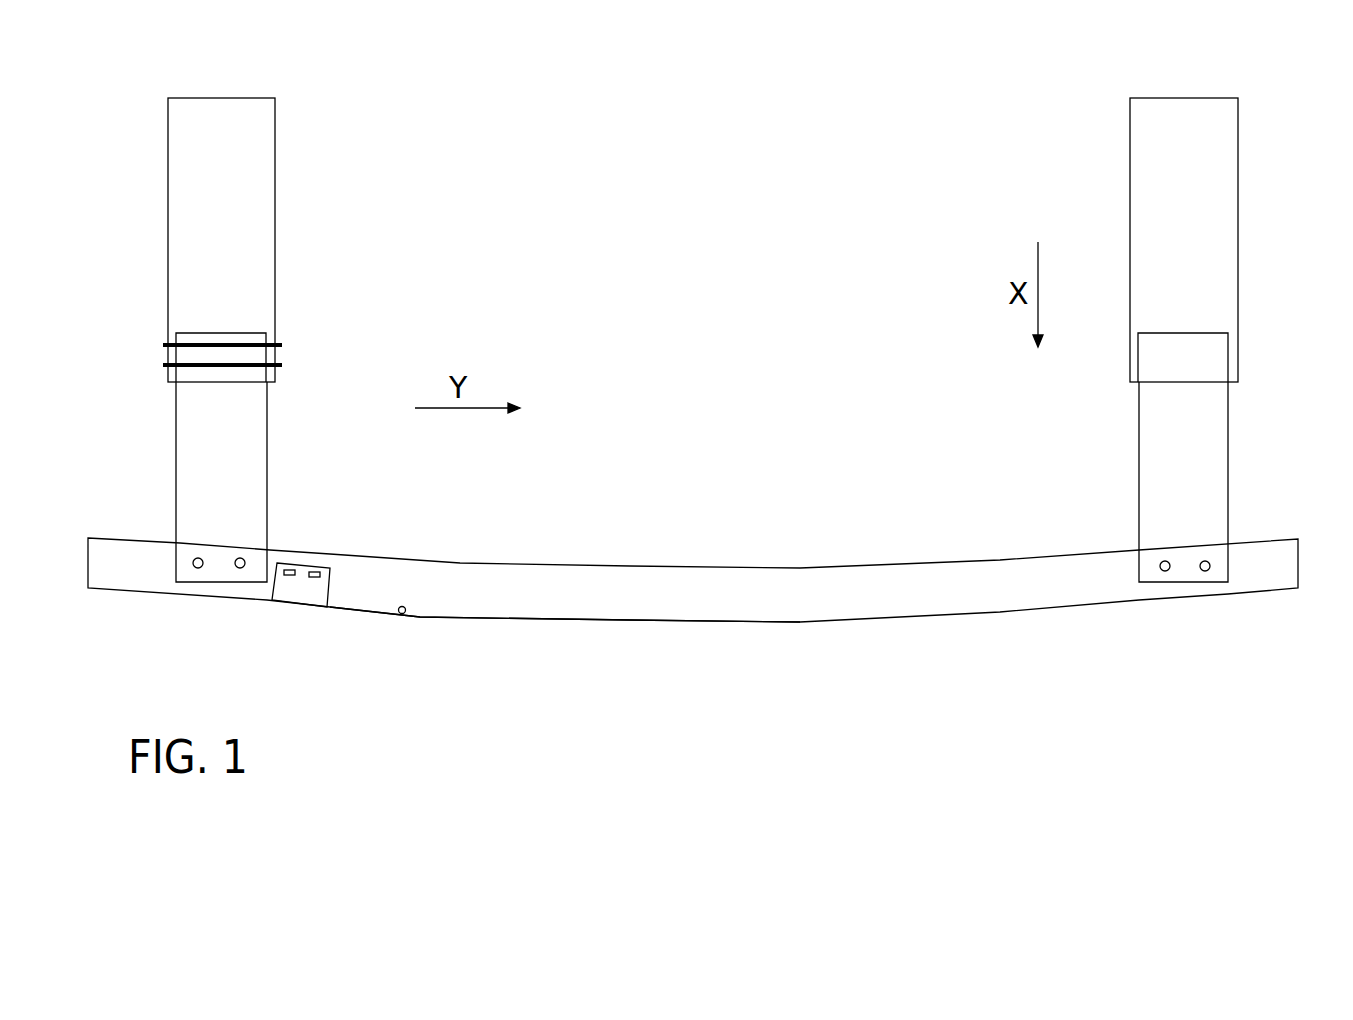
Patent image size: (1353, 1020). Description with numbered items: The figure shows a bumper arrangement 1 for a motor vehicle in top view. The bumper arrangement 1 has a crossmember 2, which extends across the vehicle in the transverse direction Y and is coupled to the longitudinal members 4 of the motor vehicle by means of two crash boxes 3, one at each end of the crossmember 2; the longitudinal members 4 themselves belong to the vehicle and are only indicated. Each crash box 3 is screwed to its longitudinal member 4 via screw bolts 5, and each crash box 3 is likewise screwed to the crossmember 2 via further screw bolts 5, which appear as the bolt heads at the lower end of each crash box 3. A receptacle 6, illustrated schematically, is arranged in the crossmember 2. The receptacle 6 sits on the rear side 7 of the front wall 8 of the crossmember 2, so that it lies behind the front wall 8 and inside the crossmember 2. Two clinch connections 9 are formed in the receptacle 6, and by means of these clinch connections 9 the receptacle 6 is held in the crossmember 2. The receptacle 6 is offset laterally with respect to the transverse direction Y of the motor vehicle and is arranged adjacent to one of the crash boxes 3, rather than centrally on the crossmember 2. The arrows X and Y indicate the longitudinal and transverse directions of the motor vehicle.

The bumper arrangement 1 is at (823, 202).
The crossmember 2 is at (578, 600).
The crash box 3 is at (245, 482).
The longitudinal member 4 is at (252, 212).
The screw bolts 5 is at (283, 365).
The receptacle 6 is at (295, 595).
The rear side 7 is at (398, 613).
The front wall 8 is at (470, 620).
The clinch connections 9 is at (314, 569).